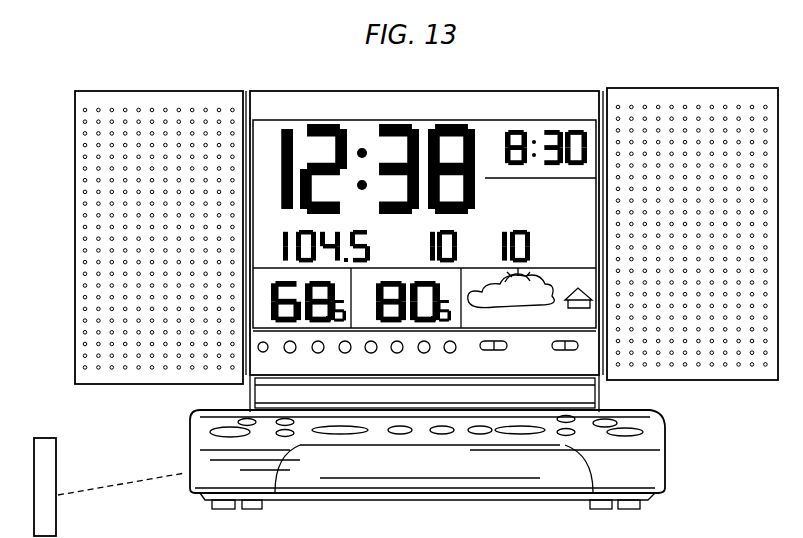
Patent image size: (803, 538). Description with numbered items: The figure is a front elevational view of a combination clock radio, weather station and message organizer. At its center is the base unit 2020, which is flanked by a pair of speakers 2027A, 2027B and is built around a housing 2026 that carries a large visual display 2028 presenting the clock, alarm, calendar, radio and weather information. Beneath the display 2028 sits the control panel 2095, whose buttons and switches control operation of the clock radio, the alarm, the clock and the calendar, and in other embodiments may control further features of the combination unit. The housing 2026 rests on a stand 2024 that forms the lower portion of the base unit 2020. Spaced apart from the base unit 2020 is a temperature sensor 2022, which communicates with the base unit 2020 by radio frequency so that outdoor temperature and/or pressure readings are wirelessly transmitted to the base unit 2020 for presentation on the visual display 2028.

The base unit 2020 is at (262, 50).
The temperature sensor 2022 is at (40, 437).
The stand 2024 is at (190, 458).
The housing 2026 is at (556, 90).
The speaker 2027A is at (118, 91).
The speaker 2027B is at (732, 88).
The visual display 2028 is at (355, 124).
The control panel 2095 is at (345, 378).